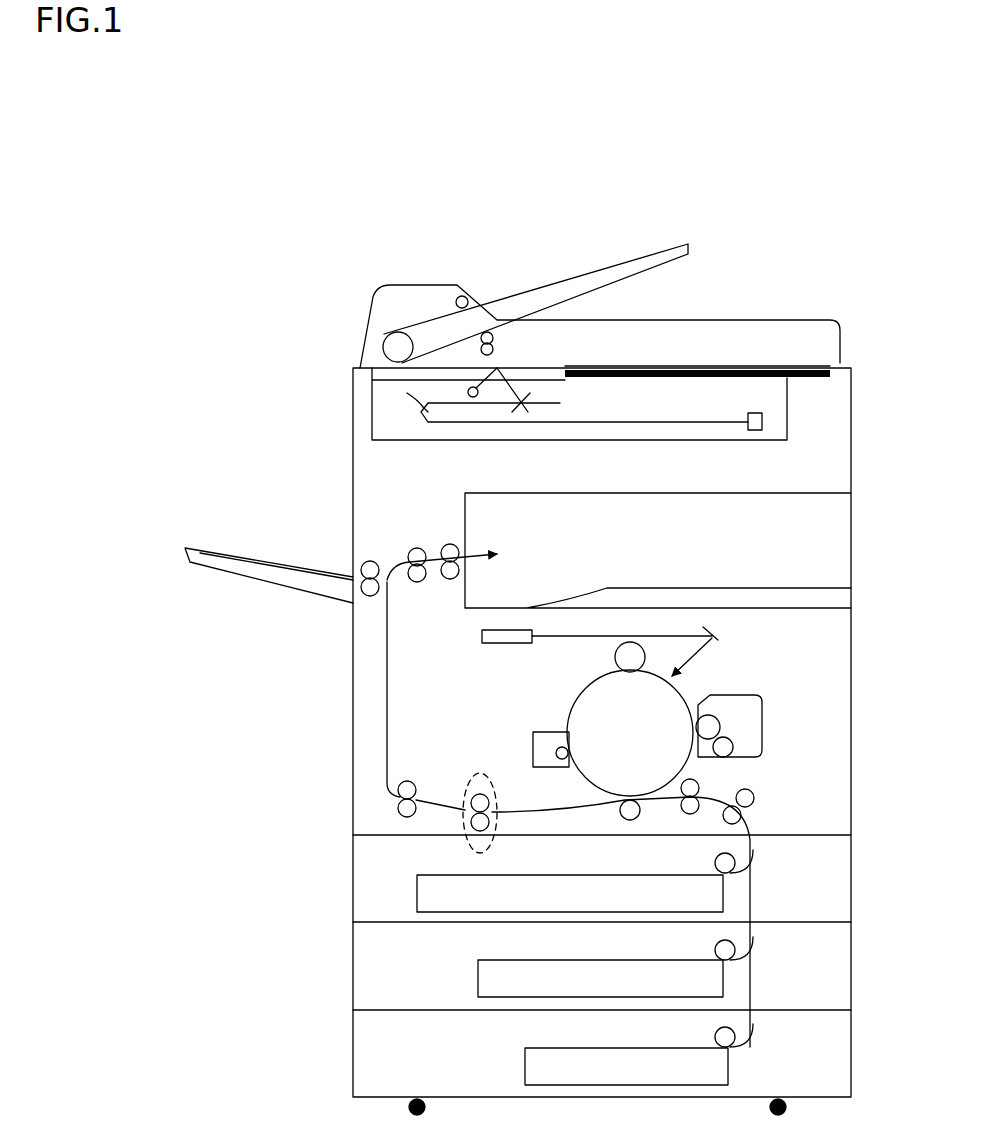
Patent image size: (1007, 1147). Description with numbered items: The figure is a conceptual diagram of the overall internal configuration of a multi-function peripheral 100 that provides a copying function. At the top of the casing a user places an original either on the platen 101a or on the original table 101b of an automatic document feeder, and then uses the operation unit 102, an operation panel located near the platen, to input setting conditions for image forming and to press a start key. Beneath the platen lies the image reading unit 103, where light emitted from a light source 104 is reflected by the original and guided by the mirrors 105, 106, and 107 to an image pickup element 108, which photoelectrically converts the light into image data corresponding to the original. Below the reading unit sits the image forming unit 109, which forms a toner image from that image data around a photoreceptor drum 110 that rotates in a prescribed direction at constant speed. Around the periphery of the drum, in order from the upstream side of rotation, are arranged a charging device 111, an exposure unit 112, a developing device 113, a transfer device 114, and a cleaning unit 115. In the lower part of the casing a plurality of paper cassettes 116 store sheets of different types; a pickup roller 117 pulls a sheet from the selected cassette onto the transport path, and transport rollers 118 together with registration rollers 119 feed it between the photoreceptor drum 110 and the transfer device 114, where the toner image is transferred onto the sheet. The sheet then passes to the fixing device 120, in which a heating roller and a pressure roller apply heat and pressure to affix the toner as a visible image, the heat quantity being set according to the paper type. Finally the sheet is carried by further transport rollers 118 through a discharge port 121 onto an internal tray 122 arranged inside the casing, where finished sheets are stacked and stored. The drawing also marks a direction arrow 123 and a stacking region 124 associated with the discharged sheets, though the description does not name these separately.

The multi-function peripheral 100 is at (602, 238).
The platen 101a is at (702, 365).
The original table 101b is at (507, 297).
The operation unit 102 is at (795, 370).
The image reading unit 103 is at (342, 442).
The light source 104 is at (478, 390).
The mirror 105 is at (532, 405).
The mirror 106 is at (407, 393).
The mirror 107 is at (422, 422).
The image pickup element 108 is at (760, 413).
The image forming unit 109 is at (340, 813).
The photoreceptor drum 110 is at (592, 712).
The charging device 111 is at (617, 652).
The exposure unit 112 is at (480, 645).
The developing device 113 is at (770, 757).
The transfer device 114 is at (620, 808).
The cleaning unit 115 is at (533, 737).
The paper cassette 116 is at (417, 902).
The pickup roller 117 is at (725, 863).
The transport rollers 118 is at (397, 787).
The registration rollers 119 is at (687, 810).
The fixing device 120 is at (465, 827).
The discharge port 121 is at (378, 583).
The internal tray 122 is at (190, 552).
The sheet discharge direction 123 is at (472, 540).
The discharge tray 124 is at (540, 605).